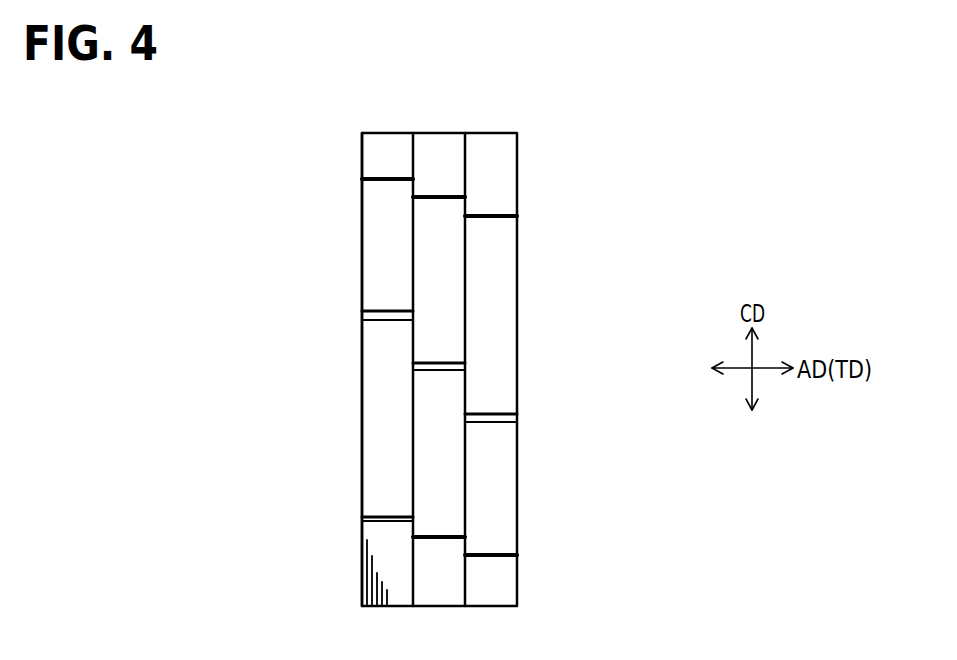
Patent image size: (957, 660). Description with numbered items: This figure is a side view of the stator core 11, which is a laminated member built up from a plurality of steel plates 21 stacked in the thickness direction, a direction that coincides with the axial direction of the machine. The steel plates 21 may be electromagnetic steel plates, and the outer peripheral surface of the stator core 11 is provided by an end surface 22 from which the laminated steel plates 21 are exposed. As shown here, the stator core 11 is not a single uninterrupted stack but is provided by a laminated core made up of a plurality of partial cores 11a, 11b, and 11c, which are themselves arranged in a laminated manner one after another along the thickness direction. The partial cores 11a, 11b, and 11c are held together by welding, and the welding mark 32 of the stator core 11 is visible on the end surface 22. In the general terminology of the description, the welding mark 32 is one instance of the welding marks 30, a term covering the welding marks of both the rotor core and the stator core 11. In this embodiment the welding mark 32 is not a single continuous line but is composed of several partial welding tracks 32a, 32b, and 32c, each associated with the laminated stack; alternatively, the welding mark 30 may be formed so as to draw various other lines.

The stator core 11 is at (545, 211).
The partial core 11a is at (373, 131).
The partial core 11b is at (437, 131).
The partial core 11c is at (497, 131).
The steel plate 21 is at (365, 590).
The end surface 22 is at (492, 528).
The welding mark 30 is at (322, 366).
The welding mark 32 is at (368, 420).
The partial welding track 32a is at (393, 311).
The partial welding track 32b is at (427, 372).
The partial welding track 32c is at (498, 414).